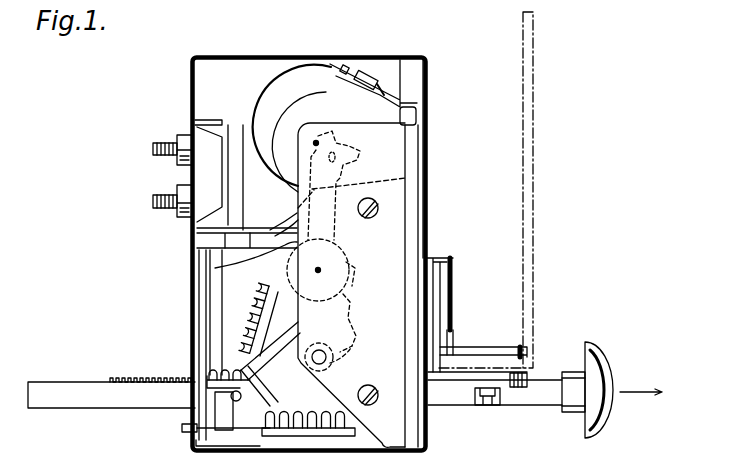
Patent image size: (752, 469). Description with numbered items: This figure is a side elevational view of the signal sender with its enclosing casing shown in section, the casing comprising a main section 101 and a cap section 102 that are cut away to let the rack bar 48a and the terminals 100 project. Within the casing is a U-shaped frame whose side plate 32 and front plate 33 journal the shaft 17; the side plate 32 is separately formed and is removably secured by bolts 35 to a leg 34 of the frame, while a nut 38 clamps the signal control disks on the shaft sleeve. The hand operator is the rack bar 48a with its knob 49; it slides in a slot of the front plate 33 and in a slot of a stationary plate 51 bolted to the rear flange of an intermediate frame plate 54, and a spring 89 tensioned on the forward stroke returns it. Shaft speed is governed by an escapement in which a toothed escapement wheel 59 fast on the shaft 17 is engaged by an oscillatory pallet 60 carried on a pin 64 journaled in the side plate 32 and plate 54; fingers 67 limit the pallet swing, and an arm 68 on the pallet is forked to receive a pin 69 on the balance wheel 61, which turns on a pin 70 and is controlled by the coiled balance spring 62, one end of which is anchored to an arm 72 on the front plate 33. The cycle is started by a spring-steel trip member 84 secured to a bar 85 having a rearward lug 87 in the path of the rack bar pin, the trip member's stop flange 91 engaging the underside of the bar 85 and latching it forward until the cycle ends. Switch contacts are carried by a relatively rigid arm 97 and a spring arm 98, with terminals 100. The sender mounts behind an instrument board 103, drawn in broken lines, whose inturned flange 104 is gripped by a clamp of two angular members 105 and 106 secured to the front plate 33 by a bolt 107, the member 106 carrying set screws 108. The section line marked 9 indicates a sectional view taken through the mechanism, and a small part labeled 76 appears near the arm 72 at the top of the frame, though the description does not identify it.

The section line 9- 9 is at (332, 44).
The shaft 17 is at (346, 366).
The side plate 32 is at (388, 152).
The front plate 33 is at (412, 113).
The leg 34 is at (410, 170).
The bolts 35 is at (378, 208).
The nut 38 is at (360, 468).
The rack bar 48a is at (95, 398).
The knob or button 49 is at (586, 342).
The stationary plate 51 is at (204, 333).
The intermediate frame member or plate 54 is at (220, 278).
The toothed escapement wheel 59 is at (247, 366).
The oscillatory pallet 60 is at (265, 297).
The balance wheel 61 is at (290, 112).
The coiled balance spring 62 is at (293, 90).
The pin 64 is at (276, 280).
The spaced fingers 67 is at (352, 340).
The arm 68 is at (400, 185).
The pin 69 is at (350, 135).
The pin 70 is at (316, 143).
The arm 72 is at (380, 92).
The lever 76 is at (340, 64).
The trip member 84 is at (198, 449).
The bar 85 is at (182, 428).
The lug 87 is at (232, 430).
The spring 89 is at (258, 262).
The stop flange 91 is at (283, 443).
The relatively rigid arm 97 is at (240, 235).
The spring arm 98 is at (293, 240).
The terminals 100 is at (183, 186).
The main section 101 is at (190, 72).
The cap section 102 is at (428, 68).
The instrument board 103 is at (523, 268).
The inturned flange 104 is at (466, 372).
The angular member 105 is at (478, 352).
The angular member 106 is at (510, 385).
The bolt 107 is at (455, 290).
The set screw 108 is at (488, 404).